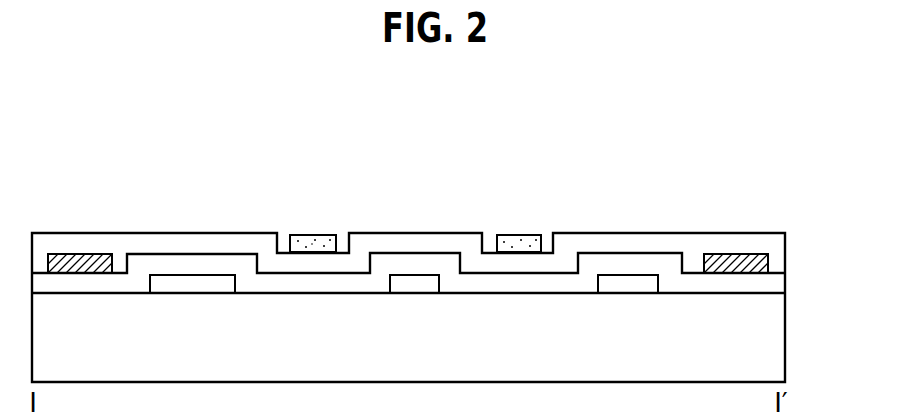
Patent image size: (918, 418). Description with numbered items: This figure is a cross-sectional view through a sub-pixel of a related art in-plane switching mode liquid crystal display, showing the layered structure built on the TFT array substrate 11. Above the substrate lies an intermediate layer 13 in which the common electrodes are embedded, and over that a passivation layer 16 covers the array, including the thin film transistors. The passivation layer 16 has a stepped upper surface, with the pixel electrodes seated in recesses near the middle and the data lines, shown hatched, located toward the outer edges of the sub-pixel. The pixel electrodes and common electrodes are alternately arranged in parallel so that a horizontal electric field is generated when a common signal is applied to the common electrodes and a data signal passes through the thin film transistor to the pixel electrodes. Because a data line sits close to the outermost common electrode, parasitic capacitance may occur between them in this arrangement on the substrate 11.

The TFT array substrate 11 is at (778, 337).
The insulating layer 13 is at (778, 283).
The passivation layer 16 is at (778, 254).